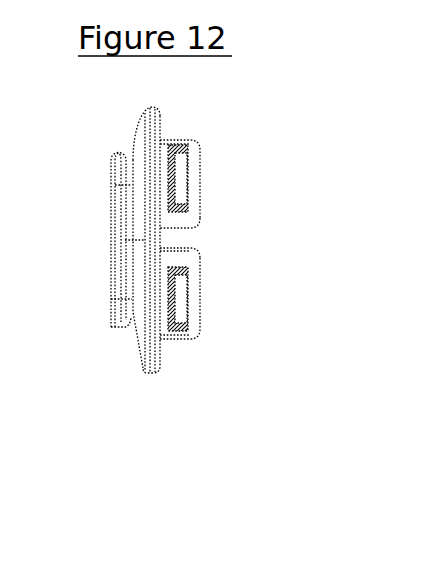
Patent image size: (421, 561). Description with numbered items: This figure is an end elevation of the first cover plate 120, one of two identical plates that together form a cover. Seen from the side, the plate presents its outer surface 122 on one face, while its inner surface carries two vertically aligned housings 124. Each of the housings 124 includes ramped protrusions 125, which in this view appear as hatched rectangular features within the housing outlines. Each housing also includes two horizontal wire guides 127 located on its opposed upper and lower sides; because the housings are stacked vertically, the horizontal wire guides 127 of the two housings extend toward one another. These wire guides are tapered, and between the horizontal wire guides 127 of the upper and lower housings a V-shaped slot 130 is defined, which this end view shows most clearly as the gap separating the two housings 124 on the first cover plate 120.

The first cover plate 120 is at (98, 398).
The outer surface 122 is at (117, 260).
The housings 124 is at (198, 172).
The ramped protrusions 125 is at (177, 160).
The horizontal wire guides 127 is at (183, 218).
The V-shaped slot 130 is at (190, 238).